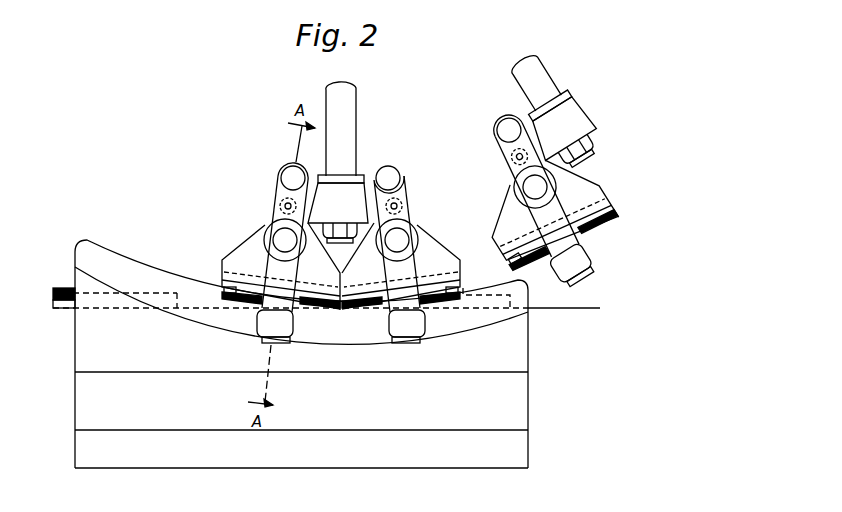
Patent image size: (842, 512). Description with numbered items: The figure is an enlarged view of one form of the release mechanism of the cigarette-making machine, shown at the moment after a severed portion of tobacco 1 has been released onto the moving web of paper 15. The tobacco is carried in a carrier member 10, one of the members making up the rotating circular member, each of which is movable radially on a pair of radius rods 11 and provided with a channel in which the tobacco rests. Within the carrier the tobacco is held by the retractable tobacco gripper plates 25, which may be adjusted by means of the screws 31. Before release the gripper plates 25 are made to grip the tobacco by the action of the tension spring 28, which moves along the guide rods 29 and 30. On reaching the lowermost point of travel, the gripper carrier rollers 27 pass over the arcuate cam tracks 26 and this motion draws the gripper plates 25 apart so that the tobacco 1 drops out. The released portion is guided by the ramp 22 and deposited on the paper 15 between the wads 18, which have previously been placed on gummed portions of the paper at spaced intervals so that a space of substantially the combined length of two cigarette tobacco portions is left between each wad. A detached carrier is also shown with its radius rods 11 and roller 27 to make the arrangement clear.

The tobacco 1 is at (63, 288).
The carrier member 10 is at (349, 197).
The radius rod 11 is at (337, 157).
The web of paper 15 is at (66, 304).
The wad 18 is at (202, 295).
The ramp 22 is at (301, 368).
The tobacco gripper plate 25 is at (238, 288).
The arcuate cam track 26 is at (152, 280).
The gripper carrier roller 27 is at (396, 318).
The tension spring 28 is at (283, 201).
The guide rod 29 is at (292, 176).
The guide rod 30 is at (284, 239).
The screw 31 is at (453, 294).